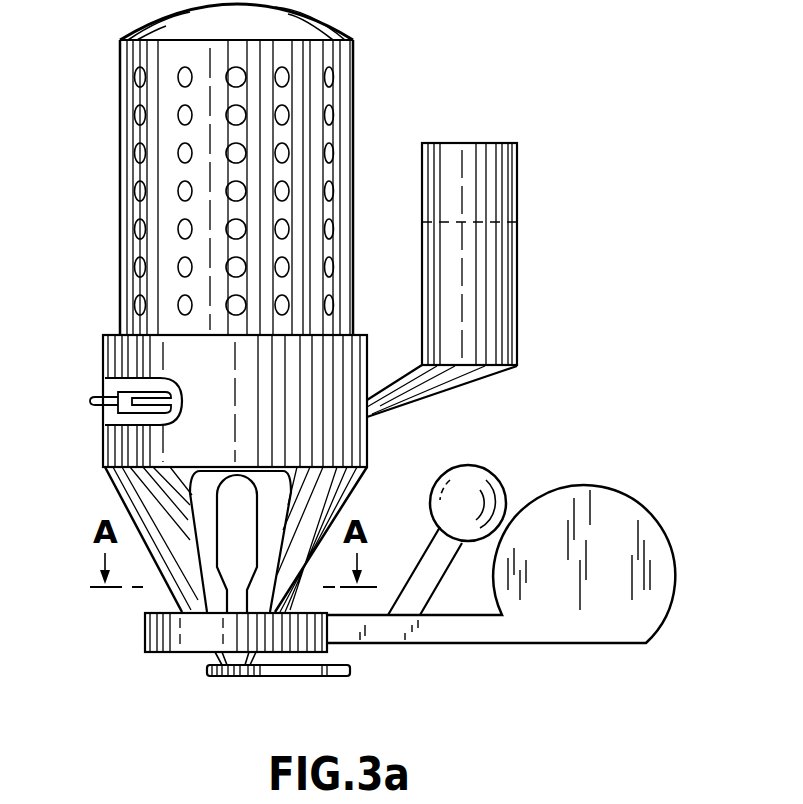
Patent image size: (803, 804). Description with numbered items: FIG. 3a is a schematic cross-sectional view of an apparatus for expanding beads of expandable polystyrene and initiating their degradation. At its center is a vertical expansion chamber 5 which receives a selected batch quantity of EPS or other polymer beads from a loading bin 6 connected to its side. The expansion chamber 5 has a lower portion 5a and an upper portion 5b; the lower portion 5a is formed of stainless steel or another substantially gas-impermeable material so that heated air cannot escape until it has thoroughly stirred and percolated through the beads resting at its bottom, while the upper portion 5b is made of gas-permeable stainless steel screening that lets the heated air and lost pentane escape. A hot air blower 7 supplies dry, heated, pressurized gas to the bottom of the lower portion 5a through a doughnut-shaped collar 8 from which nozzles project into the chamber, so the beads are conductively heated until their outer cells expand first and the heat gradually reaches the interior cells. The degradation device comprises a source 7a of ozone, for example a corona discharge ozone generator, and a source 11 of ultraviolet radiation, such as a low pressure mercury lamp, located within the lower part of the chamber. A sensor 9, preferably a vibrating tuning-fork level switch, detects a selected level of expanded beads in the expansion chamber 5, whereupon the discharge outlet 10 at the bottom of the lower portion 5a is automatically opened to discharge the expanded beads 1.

The expanded beads 1 is at (512, 262).
The vertical expansion chamber 5 is at (399, 93).
The lower portion 5a is at (113, 453).
The upper portion 5b is at (140, 137).
The loading bin 6 is at (505, 175).
The hot air blower 7 is at (625, 492).
The source of ozone 7a is at (483, 482).
The doughnut-shaped collar 8 is at (145, 633).
The sensor 9 is at (103, 400).
The discharge outlet 10 is at (303, 677).
The source of ultraviolet radiation 11 is at (230, 515).